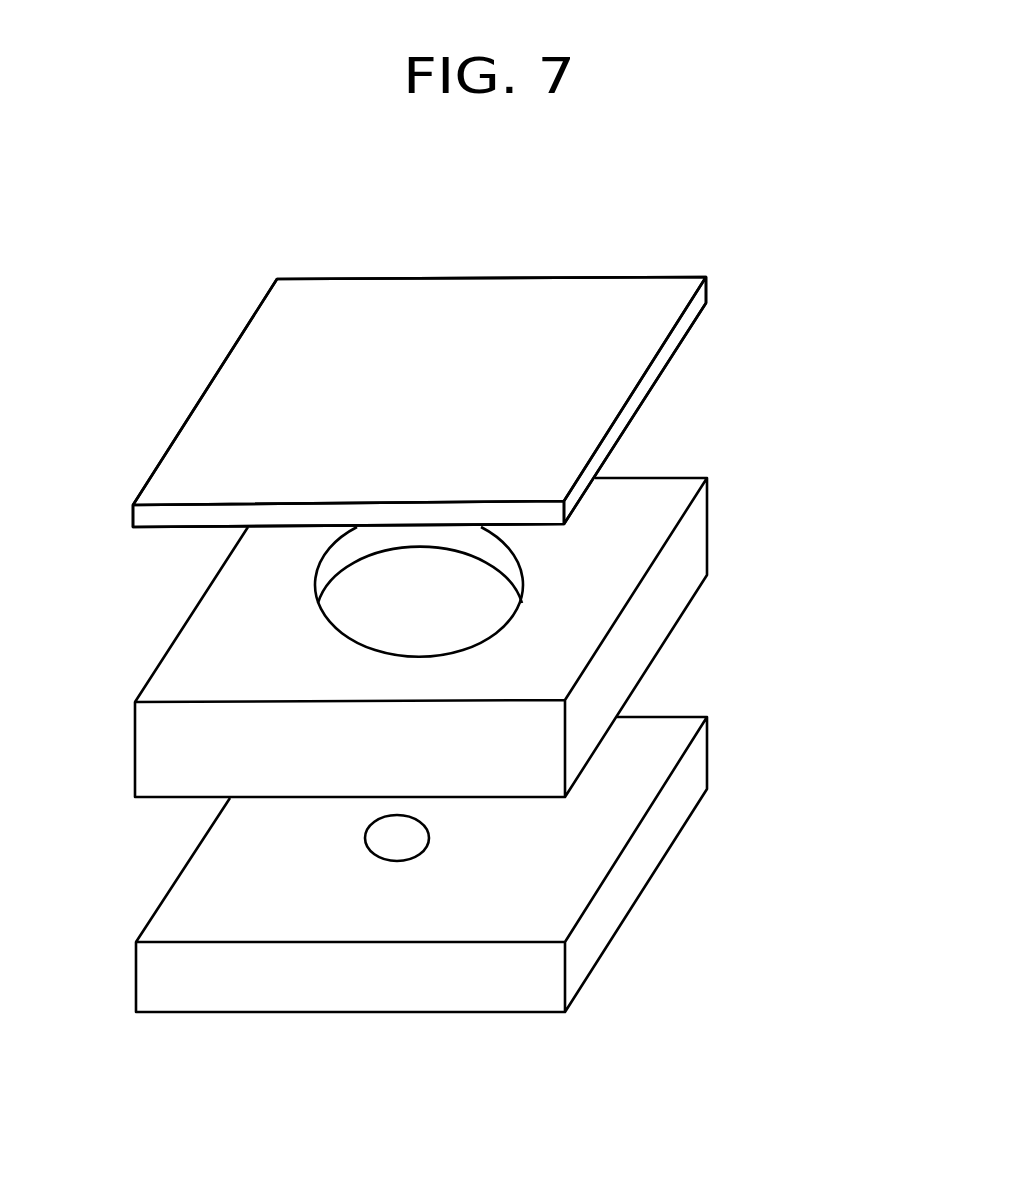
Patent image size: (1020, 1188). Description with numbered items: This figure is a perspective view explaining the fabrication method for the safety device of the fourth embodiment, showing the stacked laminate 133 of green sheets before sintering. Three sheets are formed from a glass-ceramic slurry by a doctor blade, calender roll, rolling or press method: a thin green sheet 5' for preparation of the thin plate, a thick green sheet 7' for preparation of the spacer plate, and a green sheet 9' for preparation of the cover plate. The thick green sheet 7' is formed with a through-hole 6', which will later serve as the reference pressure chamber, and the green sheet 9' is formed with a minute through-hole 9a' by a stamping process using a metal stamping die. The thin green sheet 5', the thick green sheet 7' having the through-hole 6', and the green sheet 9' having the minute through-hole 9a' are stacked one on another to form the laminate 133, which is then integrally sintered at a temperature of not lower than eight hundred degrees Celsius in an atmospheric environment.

The layered sensor/stack assembly 133 is at (750, 251).
The thin green sheet 5' is at (478, 402).
The thick green sheet 7' is at (489, 637).
The through-hole 6' is at (285, 592).
The green sheet 9' is at (491, 864).
The minute through-hole 9a' is at (229, 860).